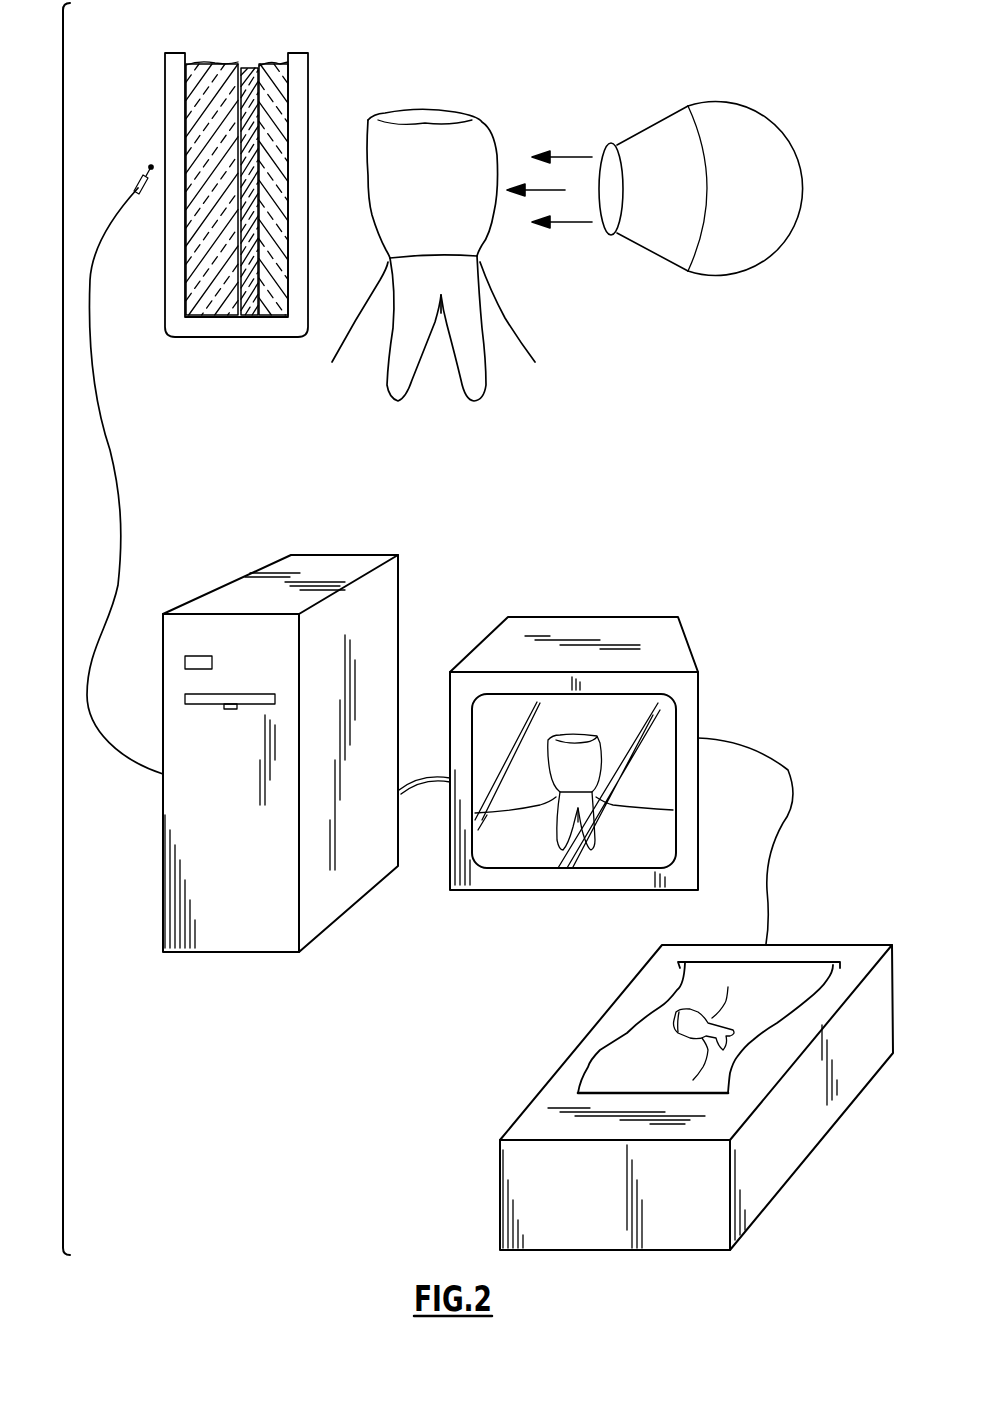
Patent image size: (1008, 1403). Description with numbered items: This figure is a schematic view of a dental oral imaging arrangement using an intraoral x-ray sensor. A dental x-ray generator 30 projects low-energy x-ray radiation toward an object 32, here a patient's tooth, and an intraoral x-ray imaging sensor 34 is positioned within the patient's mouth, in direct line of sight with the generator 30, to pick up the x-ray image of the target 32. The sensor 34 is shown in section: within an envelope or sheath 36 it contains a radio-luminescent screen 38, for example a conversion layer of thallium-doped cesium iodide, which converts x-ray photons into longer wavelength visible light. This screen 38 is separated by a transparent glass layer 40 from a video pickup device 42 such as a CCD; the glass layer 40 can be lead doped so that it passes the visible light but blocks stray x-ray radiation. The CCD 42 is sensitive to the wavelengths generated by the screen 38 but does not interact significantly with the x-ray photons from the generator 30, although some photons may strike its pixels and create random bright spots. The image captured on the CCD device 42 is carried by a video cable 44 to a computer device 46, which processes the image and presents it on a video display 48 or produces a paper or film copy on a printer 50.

The dental x-ray generator 30 is at (722, 277).
The object 32 is at (466, 122).
The intraoral x-ray imaging sensor 34 is at (264, 194).
The envelope or sheath 36 is at (310, 67).
The radio-luminescent screen 38 is at (280, 62).
The transparent glass layer 40 is at (252, 67).
The video pickup device 42 is at (205, 62).
The video cable 44 is at (119, 486).
The computer device 46 is at (399, 586).
The video display 48 is at (528, 617).
The printer 50 is at (500, 1177).